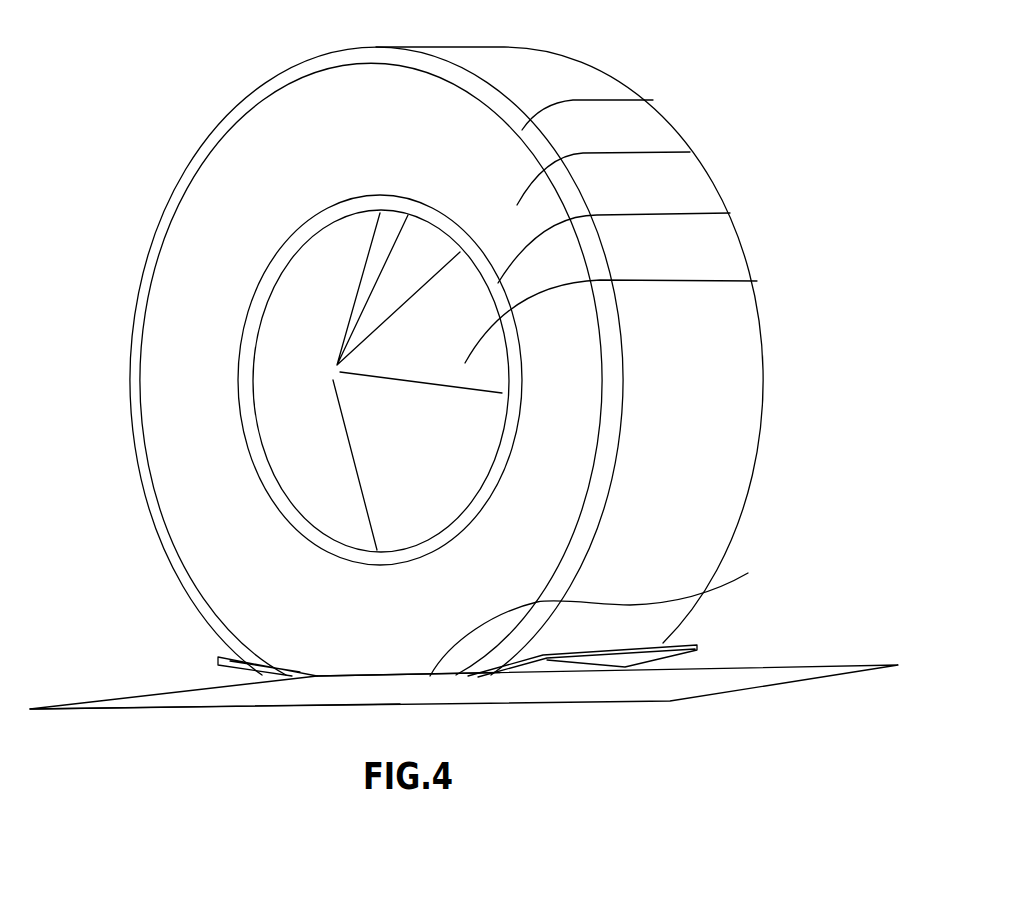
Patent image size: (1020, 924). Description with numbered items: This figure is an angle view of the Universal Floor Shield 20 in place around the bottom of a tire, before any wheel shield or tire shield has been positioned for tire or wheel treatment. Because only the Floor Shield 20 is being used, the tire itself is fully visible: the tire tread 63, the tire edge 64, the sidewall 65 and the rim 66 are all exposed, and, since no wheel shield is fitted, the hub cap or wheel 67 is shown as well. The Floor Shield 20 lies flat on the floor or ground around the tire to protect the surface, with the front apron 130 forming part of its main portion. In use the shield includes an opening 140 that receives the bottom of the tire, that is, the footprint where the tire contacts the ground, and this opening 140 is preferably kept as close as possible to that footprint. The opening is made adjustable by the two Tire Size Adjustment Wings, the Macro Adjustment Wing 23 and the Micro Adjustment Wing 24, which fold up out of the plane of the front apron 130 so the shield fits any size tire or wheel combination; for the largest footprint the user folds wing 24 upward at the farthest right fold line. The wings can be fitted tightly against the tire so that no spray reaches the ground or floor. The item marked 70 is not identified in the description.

The Universal Floor Shield 20 is at (745, 672).
The Macro Adjustment Wing 23 is at (222, 658).
The Micro Adjustment Wing 24 is at (688, 642).
The tire tread 63 is at (540, 62).
The tire edge 64 is at (653, 100).
The sidewall 65 is at (690, 152).
The rim 66 is at (730, 213).
The hub cap or wheel 67 is at (757, 281).
The substrate 70 is at (222, 717).
The front apron 130 is at (408, 689).
The opening 140 is at (425, 667).